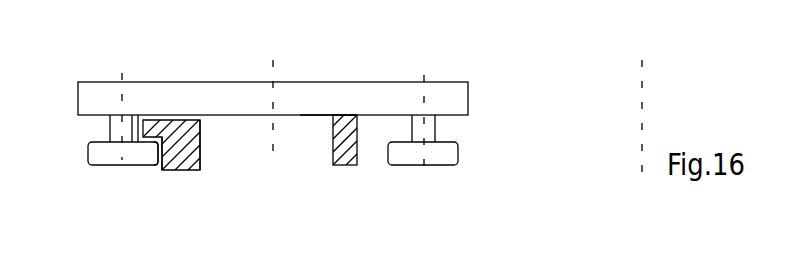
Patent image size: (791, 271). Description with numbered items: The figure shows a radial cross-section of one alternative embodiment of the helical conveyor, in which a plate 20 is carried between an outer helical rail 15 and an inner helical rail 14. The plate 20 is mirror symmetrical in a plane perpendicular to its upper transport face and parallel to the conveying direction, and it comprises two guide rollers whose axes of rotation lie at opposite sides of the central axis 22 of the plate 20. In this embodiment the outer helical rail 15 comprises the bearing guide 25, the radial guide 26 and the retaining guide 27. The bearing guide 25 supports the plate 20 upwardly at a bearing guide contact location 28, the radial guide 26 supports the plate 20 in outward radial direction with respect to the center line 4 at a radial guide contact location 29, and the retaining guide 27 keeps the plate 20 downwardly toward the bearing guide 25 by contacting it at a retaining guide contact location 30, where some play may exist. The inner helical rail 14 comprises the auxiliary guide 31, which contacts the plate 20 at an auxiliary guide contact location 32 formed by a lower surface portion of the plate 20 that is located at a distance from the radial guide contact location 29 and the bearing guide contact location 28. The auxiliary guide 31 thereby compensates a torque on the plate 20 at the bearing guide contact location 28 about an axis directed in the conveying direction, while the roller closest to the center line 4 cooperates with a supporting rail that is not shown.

The center line 4 is at (642, 90).
The inner helical rail 14 is at (343, 162).
The outer helical rail 15 is at (189, 158).
The plate 20 is at (390, 92).
The central axis 22 is at (270, 70).
The bearing guide 25 is at (172, 120).
The radial guide 26 is at (156, 161).
The retaining guide 27 is at (157, 147).
The bearing guide contact location 28 is at (202, 120).
The radial guide contact location 29 is at (163, 165).
The retaining guide contact location 30 is at (138, 130).
The auxiliary guide 31 is at (345, 116).
The auxiliary guide contact location 32 is at (320, 116).